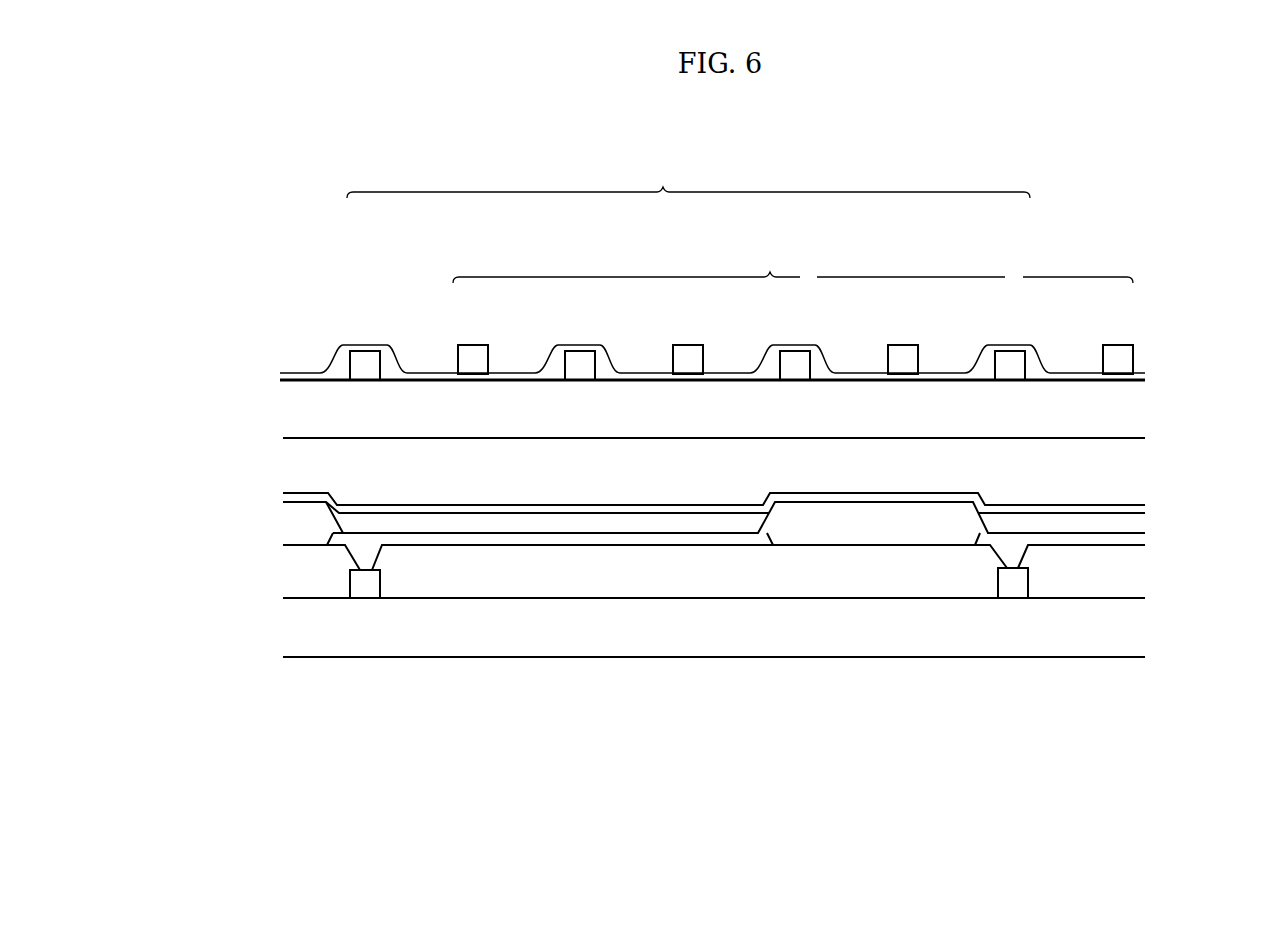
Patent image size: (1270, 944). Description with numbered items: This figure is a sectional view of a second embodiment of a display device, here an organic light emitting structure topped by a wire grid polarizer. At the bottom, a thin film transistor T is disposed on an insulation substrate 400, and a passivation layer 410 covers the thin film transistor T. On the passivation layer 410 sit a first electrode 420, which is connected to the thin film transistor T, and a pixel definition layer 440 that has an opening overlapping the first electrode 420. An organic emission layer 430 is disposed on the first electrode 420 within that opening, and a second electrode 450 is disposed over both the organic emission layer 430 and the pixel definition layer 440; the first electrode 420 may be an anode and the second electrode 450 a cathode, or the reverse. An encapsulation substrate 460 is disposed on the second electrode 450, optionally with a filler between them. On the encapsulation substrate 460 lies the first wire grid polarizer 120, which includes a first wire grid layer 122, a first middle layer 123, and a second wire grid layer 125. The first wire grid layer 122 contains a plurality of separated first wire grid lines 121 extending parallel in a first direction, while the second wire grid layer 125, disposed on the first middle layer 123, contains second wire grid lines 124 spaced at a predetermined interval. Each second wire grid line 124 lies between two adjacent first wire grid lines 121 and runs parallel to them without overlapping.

The first wire grid polarizer 120 is at (1152, 342).
The first wire grid lines 121 is at (370, 357).
The first wire grid layer 122 is at (688, 176).
The first middle layer 123 is at (305, 376).
The second wire grid lines 124 is at (478, 352).
The second wire grid layer 125 is at (793, 261).
The insulation substrate 400 is at (1128, 630).
The passivation layer 410 is at (500, 577).
The first electrode 420 is at (432, 545).
The organic emission layer 430 is at (338, 523).
The pixel definition layer 440 is at (290, 518).
The second electrode 450 is at (282, 497).
The encapsulation substrate 460 is at (1128, 413).
The thin film transistor T is at (363, 583).